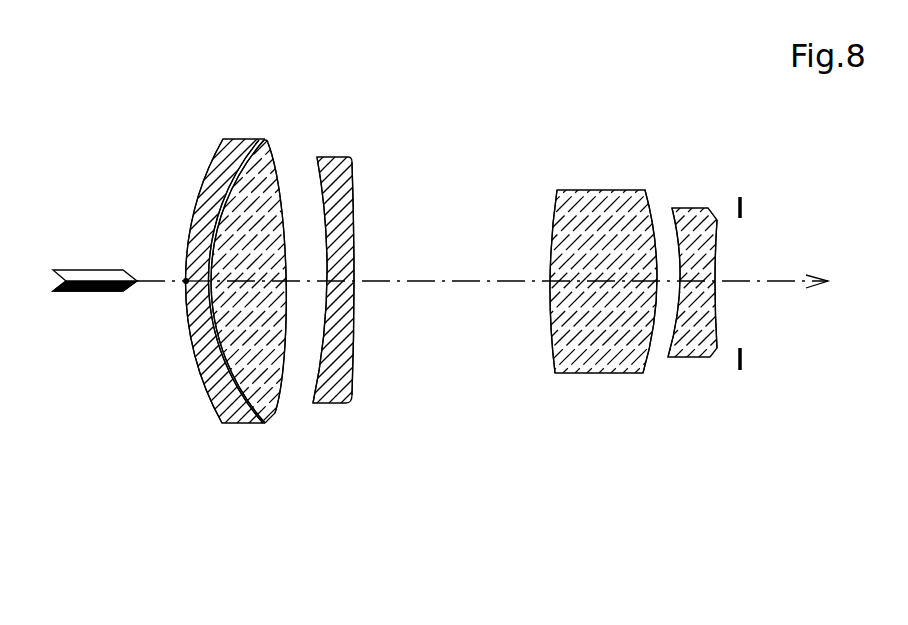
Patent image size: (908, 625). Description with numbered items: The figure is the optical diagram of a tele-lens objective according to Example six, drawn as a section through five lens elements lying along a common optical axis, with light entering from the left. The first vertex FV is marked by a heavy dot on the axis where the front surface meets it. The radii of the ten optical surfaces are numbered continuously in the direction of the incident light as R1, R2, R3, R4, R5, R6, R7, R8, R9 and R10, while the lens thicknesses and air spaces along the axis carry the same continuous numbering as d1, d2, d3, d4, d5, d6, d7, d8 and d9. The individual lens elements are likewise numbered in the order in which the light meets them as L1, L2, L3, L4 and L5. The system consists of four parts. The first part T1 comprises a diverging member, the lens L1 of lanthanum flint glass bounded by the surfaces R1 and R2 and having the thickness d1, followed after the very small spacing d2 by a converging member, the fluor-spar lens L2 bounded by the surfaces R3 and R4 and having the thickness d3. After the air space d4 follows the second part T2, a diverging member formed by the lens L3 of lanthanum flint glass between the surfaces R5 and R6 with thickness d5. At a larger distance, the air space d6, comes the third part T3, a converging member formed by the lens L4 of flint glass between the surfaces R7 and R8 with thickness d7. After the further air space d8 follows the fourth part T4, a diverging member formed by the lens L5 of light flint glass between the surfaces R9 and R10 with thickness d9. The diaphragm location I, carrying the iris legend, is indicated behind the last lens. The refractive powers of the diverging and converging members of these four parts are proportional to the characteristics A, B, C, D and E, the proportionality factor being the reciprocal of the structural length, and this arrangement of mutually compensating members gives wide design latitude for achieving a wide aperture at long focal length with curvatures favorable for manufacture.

The radius of first optical surface R1 is at (213, 158).
The radius of second optical surface R2 is at (258, 140).
The radius of third optical surface R3 is at (263, 141).
The radius of fourth optical surface R4 is at (277, 153).
The radius of fifth optical surface R5 is at (316, 172).
The radius of sixth optical surface R6 is at (352, 175).
The radius of seventh optical surface R7 is at (553, 205).
The radius of eighth optical surface R8 is at (645, 203).
The radius of ninth optical surface R9 is at (675, 223).
The radius of tenth optical surface R10 is at (718, 222).
The thickness of first lens d1 is at (190, 280).
The space between second and third surfaces d2 is at (204, 276).
The thickness of second lens d3 is at (249, 284).
The air space between second and third lenses d4 is at (307, 284).
The thickness of third lens d5 is at (340, 286).
The air space between third and fourth lenses d6 is at (451, 282).
The thickness of fourth lens d7 is at (603, 284).
The air space between fourth and fifth lenses d8 is at (668, 287).
The thickness of fifth lens d9 is at (697, 285).
The first lens element L1 is at (232, 413).
The second lens element L2 is at (265, 413).
The third lens element L3 is at (327, 403).
The fourth lens element L4 is at (598, 360).
The fifth lens element L5 is at (690, 352).
The first part of tele-lens system T1 is at (454, 347).
The second part of tele-lens system T2 is at (454, 347).
The third part of tele-lens system T3 is at (454, 349).
The fourth part of tele-lens system T4 is at (454, 349).
The first vertex FV is at (185, 285).
The iris diaphragm location I is at (742, 354).